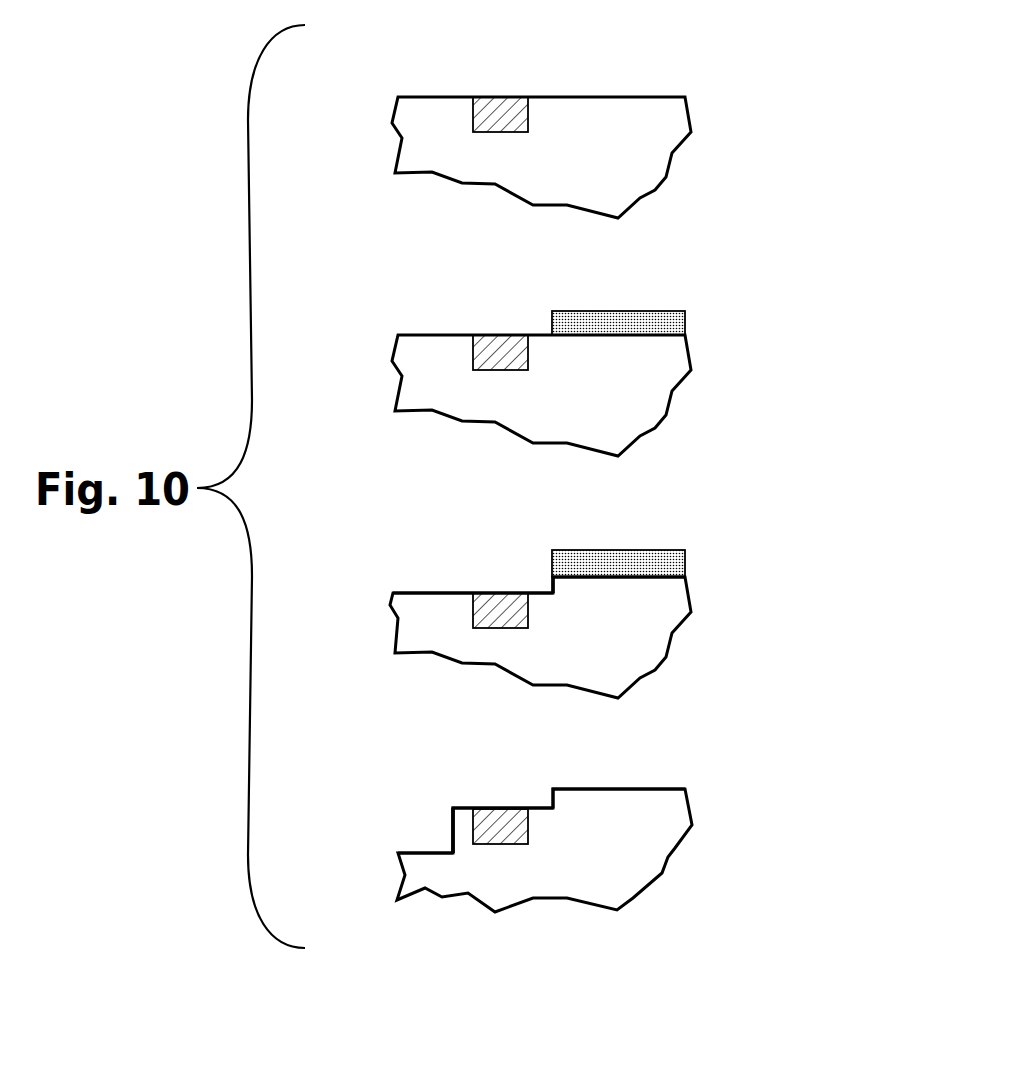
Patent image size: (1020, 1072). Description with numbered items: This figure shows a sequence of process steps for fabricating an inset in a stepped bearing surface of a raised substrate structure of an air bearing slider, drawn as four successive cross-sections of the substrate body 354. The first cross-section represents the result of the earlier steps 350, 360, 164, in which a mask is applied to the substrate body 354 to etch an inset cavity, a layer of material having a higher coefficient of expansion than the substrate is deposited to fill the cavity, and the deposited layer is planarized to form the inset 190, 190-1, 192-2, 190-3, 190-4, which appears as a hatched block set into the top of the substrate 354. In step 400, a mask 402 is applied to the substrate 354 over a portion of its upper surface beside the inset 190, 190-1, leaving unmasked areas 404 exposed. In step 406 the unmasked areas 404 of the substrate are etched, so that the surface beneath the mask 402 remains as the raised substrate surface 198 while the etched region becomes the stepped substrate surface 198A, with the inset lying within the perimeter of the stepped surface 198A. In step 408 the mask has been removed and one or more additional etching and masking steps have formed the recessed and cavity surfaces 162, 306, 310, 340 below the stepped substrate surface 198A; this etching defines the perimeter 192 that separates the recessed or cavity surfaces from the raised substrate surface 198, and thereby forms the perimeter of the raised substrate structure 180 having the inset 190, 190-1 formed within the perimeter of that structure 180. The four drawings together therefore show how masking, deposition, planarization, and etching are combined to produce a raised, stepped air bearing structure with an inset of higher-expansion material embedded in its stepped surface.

The inset 190 is at (488, 422).
The inset 190-1 is at (488, 422).
The second region 192-2 is at (488, 422).
The inset 190-3 is at (488, 422).
The inset 190-4 is at (515, 820).
The process step 350 is at (619, 112).
The process step 360 is at (619, 112).
The substrate structure 164 is at (782, 30).
The substrate body 354 is at (618, 459).
The mask 402 is at (658, 323).
The process step 400 is at (727, 333).
The unmasked areas 404 is at (495, 582).
The raised substrate surface 198 is at (590, 572).
The process step 406 is at (727, 580).
The stepped substrate surface 198A is at (418, 593).
The process step 408 is at (727, 810).
The raised substrate structure 180 is at (450, 818).
The perimeter 192 is at (453, 835).
The recessed surface 162 is at (370, 880).
The recessed surface 306 is at (370, 880).
The cavity surface 310 is at (370, 880).
The cavity surface 340 is at (413, 847).